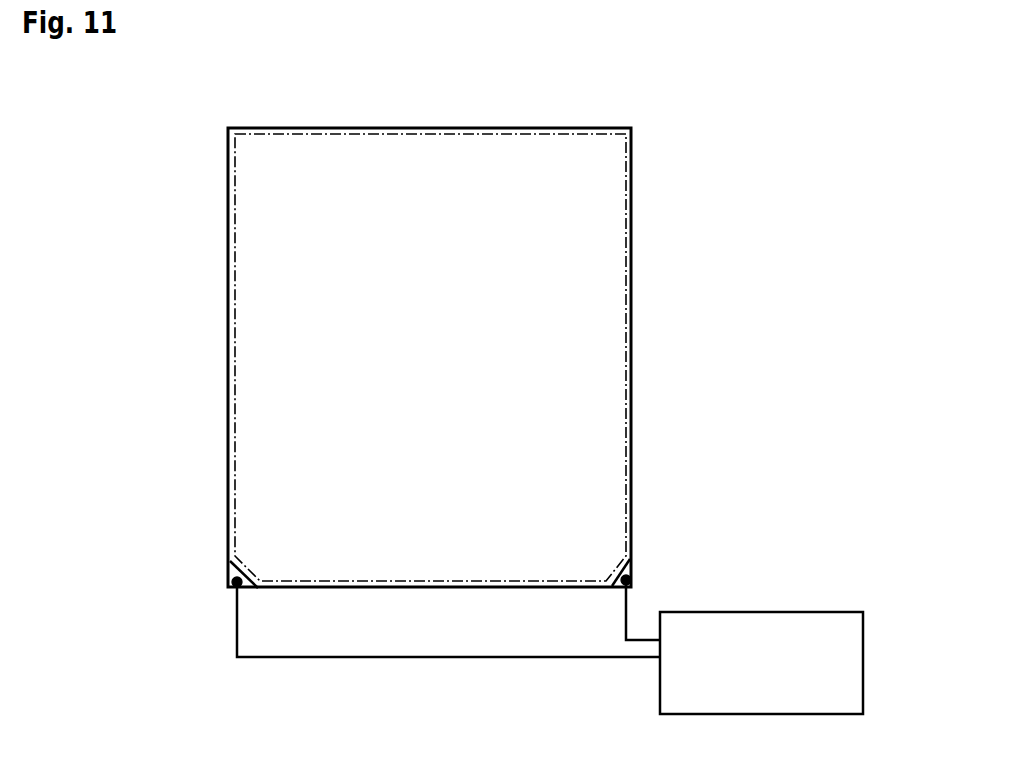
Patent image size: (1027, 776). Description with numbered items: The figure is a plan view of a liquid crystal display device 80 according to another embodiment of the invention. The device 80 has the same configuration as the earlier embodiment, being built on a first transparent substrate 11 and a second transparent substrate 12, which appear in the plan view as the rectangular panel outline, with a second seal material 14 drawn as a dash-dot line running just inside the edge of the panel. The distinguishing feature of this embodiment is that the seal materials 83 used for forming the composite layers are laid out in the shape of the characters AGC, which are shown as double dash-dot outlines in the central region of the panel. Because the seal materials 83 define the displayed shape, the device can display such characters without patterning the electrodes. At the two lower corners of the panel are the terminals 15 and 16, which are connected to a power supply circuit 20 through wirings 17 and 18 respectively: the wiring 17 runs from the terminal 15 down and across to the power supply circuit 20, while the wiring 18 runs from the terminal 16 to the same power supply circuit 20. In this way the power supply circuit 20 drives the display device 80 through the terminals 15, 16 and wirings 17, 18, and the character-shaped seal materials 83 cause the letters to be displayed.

The liquid crystal display device 80 is at (663, 143).
The first transparent substrate 11 is at (429, 357).
The second transparent substrate 12 is at (582, 452).
The second seal material 14 is at (630, 382).
The terminal 15 is at (237, 582).
The terminal 16 is at (628, 580).
The wiring 17 is at (560, 657).
The wiring 18 is at (628, 630).
The power supply circuit 20 is at (762, 612).
The seal materials for forming composite layers 83 is at (303, 342).